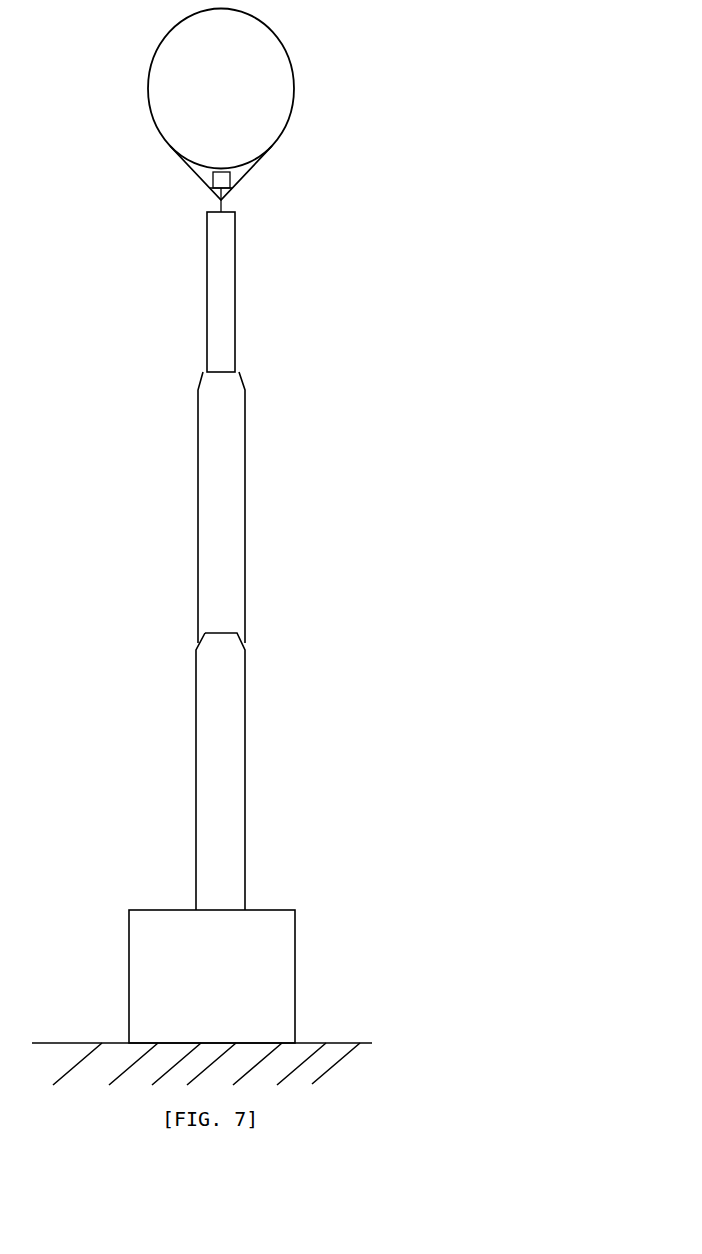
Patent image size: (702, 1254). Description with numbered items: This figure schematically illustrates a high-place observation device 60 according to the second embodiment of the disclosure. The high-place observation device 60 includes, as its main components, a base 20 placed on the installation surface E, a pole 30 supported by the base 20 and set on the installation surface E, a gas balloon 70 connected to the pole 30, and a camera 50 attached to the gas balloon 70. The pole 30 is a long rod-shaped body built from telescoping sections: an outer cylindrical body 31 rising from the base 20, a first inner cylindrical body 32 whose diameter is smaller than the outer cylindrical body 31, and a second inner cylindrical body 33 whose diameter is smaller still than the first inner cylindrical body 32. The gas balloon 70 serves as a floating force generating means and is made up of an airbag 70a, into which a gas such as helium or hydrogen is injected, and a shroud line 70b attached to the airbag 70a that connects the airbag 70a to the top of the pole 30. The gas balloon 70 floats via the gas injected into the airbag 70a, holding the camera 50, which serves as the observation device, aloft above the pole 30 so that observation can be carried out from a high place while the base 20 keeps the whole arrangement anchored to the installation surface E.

The gas balloon 70 is at (285, 125).
The airbag 70a is at (273, 68).
The shroud line 70b is at (198, 180).
The camera 50 is at (242, 177).
The high-place observation device 60 is at (296, 460).
The pole 30 is at (294, 561).
The outer cylindrical body 31 is at (227, 775).
The first inner cylindrical body 32 is at (222, 530).
The second inner cylindrical body 33 is at (218, 342).
The base 20 is at (297, 947).
The installation surface E is at (76, 1040).